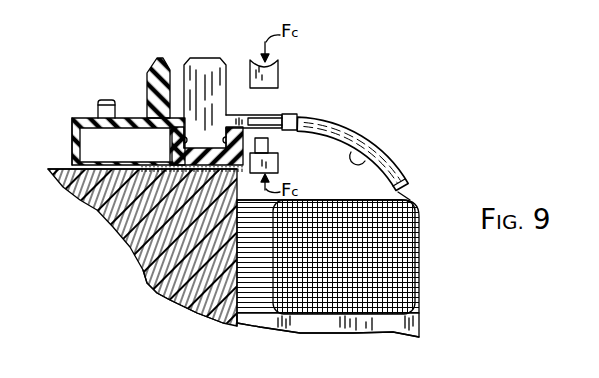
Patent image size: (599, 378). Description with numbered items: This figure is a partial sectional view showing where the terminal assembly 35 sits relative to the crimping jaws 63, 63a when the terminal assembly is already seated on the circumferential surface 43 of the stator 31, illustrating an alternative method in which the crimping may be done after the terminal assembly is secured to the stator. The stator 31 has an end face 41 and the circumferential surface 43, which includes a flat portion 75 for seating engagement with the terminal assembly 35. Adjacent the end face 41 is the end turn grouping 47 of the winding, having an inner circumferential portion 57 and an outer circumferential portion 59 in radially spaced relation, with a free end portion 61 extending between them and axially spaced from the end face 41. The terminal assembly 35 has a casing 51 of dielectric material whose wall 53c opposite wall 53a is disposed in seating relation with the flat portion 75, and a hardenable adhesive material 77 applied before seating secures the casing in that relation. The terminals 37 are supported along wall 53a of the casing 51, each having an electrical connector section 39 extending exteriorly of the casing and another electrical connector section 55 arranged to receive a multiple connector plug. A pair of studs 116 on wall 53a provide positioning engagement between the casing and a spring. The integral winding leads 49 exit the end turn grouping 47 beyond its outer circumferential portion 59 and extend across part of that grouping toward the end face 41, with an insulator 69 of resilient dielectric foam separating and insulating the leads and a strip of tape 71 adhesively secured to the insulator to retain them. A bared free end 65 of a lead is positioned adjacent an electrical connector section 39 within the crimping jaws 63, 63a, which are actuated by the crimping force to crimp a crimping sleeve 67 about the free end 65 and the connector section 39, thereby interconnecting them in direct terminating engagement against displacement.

The stator 31 is at (132, 235).
The terminal assembly 35 is at (109, 109).
The terminals 37 is at (231, 87).
The electrical connector section 39 is at (240, 114).
The end face 41 is at (240, 318).
The circumferential surface 43 is at (198, 301).
The end turn grouping 47 is at (415, 288).
The integral winding leads 49 is at (408, 190).
The casing 51 is at (72, 135).
The wall 53a is at (134, 117).
The wall 53c is at (174, 170).
The electrical connector section 55 is at (200, 58).
The inner circumferential portion 57 is at (335, 318).
The outer circumferential portion 59 is at (326, 199).
The free end portion 61 is at (353, 269).
The crimping jaw 63 is at (279, 78).
The crimping jaw 63a is at (279, 162).
The free ends 65 is at (268, 118).
The crimping sleeve 67 is at (266, 146).
The insulator 69 is at (358, 153).
The tape 71 is at (377, 159).
The flat portion 75 is at (55, 168).
The hardenable adhesive material 77 is at (195, 170).
The studs 116 is at (78, 116).